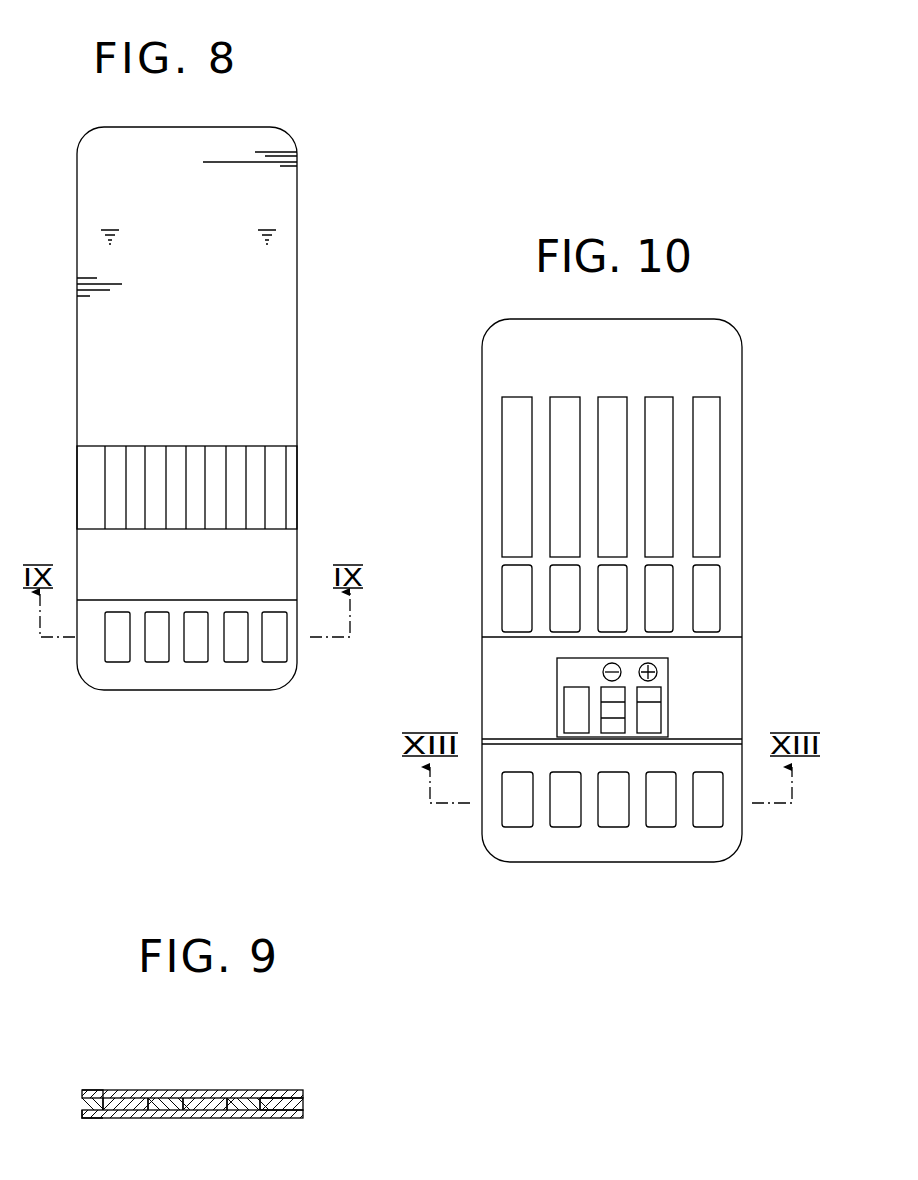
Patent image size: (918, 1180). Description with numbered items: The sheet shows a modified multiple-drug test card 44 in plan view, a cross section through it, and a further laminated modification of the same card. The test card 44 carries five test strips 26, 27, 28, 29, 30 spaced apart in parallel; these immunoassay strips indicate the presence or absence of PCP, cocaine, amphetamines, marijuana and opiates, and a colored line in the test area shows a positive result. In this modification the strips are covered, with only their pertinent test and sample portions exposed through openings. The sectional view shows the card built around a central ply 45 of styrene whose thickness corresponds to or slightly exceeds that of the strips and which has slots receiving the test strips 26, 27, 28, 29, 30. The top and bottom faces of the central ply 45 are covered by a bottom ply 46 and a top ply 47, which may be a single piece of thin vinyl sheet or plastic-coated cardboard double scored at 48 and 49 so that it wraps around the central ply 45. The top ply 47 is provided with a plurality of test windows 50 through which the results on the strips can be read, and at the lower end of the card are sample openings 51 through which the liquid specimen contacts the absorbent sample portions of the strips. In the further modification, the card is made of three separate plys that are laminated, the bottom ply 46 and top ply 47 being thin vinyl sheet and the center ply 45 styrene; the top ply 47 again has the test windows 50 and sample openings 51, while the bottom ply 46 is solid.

In FIG. 9, the test strip 26 is at (117, 1092).
In FIG. 9, the test strip 27 is at (160, 1092).
In FIG. 9, the test strip 28 is at (200, 1092).
In FIG. 9, the test strip 29 is at (238, 1092).
In FIG. 9, the test strip 30 is at (277, 1092).
In FIG. 8, the test card 44 is at (297, 207).
In FIG. 9, the central ply 45 is at (303, 1101).
In FIG. 9, the bottom ply 46 is at (300, 1122).
In FIG. 10, the top ply 47 is at (742, 360).
In FIG. 9, the top ply 47 is at (300, 1088).
In FIG. 9, the score line 48 is at (82, 1118).
In FIG. 9, the score line 49 is at (82, 1090).
In FIG. 8, the test windows 50 is at (270, 445).
In FIG. 10, the test windows 50 is at (720, 570).
In FIG. 8, the sample openings 51 is at (273, 660).
In FIG. 10, the sample openings 51 is at (718, 783).